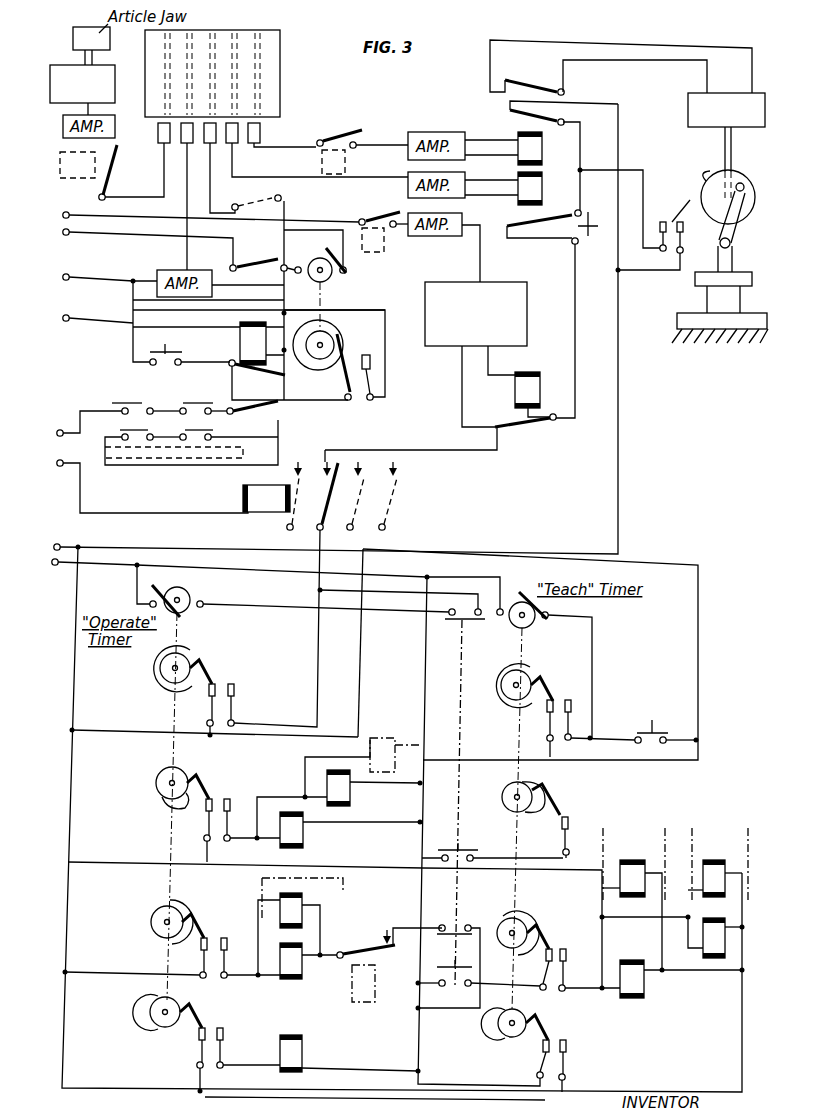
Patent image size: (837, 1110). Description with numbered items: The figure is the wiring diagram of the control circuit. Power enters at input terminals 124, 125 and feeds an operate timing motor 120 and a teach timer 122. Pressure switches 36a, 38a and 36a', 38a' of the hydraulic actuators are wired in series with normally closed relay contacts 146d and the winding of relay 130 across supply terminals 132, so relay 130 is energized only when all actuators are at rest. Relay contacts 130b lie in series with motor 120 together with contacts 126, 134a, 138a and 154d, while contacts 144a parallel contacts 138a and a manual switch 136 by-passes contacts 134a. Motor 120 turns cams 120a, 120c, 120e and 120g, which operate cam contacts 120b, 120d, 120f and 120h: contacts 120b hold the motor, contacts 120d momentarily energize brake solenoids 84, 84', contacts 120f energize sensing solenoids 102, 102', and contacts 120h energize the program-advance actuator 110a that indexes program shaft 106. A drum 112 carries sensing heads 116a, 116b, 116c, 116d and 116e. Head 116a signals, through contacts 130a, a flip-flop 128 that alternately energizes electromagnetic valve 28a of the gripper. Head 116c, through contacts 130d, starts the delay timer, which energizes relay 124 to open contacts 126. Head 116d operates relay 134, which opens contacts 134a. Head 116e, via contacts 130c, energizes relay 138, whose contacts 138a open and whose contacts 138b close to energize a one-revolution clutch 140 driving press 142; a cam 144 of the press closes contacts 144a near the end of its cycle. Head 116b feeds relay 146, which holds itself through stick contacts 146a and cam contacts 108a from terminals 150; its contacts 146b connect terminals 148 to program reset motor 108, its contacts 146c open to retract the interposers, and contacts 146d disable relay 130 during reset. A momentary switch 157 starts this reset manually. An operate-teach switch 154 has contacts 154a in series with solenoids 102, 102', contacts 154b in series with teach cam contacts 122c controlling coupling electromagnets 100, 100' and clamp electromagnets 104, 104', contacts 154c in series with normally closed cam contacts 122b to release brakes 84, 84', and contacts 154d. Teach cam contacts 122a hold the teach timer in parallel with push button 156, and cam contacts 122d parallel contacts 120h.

The electromagnetic valve 28a is at (92, 27).
The bistable flip-flop 128 is at (56, 65).
The relay contacts 130a is at (103, 147).
The relay 130 is at (60, 166).
The drum 112 is at (281, 50).
The sensing head 116a is at (158, 131).
The pickup head 116b is at (186, 145).
The sensing head 116c is at (212, 145).
The pickup head 116d is at (234, 144).
The pickup head 116e is at (262, 131).
The relay contacts 130c is at (345, 140).
The relay contacts 130d is at (385, 208).
The relay contacts 130b is at (335, 462).
The relay 138 is at (542, 148).
The relay 134 is at (542, 180).
The relay contacts 138b is at (503, 82).
The relay contacts 138a is at (508, 103).
The contacts 134a is at (505, 218).
The switch 136 is at (590, 210).
The contacts 126 is at (492, 428).
The relay 124 is at (515, 390).
The one-revolution clutch 140 is at (760, 93).
The cam 144 is at (744, 180).
The coordinated machine 142 is at (685, 283).
The contacts 144a is at (688, 200).
The terminals 148 is at (62, 218).
The relay contacts 146b is at (262, 262).
The relay contacts 146c is at (280, 202).
The program reset motor 108 is at (335, 276).
The terminals 150 is at (62, 280).
The switch 157 is at (150, 358).
The relay 146 is at (240, 346).
The stick contacts 146a is at (290, 376).
The program shaft 106 is at (336, 366).
The cam contacts 108a is at (366, 355).
The pressure switch 36a is at (138, 393).
The pressure switch 38a is at (204, 393).
The relay contacts 146d is at (274, 418).
The pressure switch 36a' is at (181, 436).
The pressure switch 38a' is at (214, 424).
The supply terminals 132 is at (57, 466).
The input terminal 125 is at (53, 565).
The operate timing motor 120 is at (196, 606).
The cam 120a is at (160, 678).
The cam contacts 120b is at (230, 684).
The cam 120c is at (160, 793).
The cam contacts 120d is at (228, 799).
The servo lock or brake solenoid 84' is at (364, 772).
The servo lock or brake solenoid 84 is at (351, 830).
The cam 120e is at (152, 925).
The cam contacts 120f is at (222, 938).
The cam 120g is at (140, 1020).
The cam contacts 120h is at (219, 1028).
The sensing solenoid 102' is at (320, 924).
The sensing solenoid 102 is at (313, 964).
The actuator 110a is at (302, 1052).
The contacts 154a is at (465, 924).
The contacts 154b is at (455, 986).
The contacts 154c is at (470, 852).
The contacts 154d is at (478, 618).
The operate-teach switch 154 is at (462, 781).
The teach timer 122 is at (535, 620).
The cam contacts 122a is at (560, 698).
The push button switch 156 is at (635, 733).
The cam contacts 122b is at (566, 829).
The cam contacts 122c is at (560, 949).
The cam contacts 122d is at (550, 1040).
The teach motor-coupling electromagnet 100' is at (633, 899).
The clamp electromagnet 104' is at (718, 864).
The clamp electromagnet 104 is at (672, 944).
The teach motor-coupling electromagnet 100 is at (655, 982).